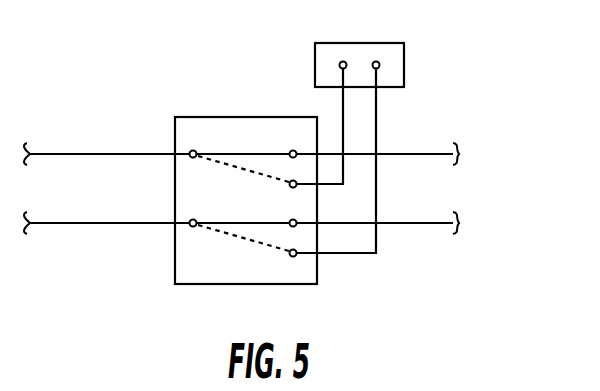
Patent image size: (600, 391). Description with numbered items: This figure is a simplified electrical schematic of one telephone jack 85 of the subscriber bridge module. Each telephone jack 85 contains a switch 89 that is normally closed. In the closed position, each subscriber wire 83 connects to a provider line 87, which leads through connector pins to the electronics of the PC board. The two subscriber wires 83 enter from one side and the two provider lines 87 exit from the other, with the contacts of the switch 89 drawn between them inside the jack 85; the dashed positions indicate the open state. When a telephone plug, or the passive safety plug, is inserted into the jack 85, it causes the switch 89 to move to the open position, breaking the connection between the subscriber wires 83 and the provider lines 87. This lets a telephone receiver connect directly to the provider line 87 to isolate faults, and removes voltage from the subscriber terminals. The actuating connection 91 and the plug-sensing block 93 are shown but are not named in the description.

The subscriber wire 83 is at (420, 152).
The telephone jack 85 is at (202, 132).
The provider line 87 is at (103, 153).
The switch 89 is at (232, 154).
The control lines 91 is at (377, 120).
The relay controller 93 is at (393, 57).